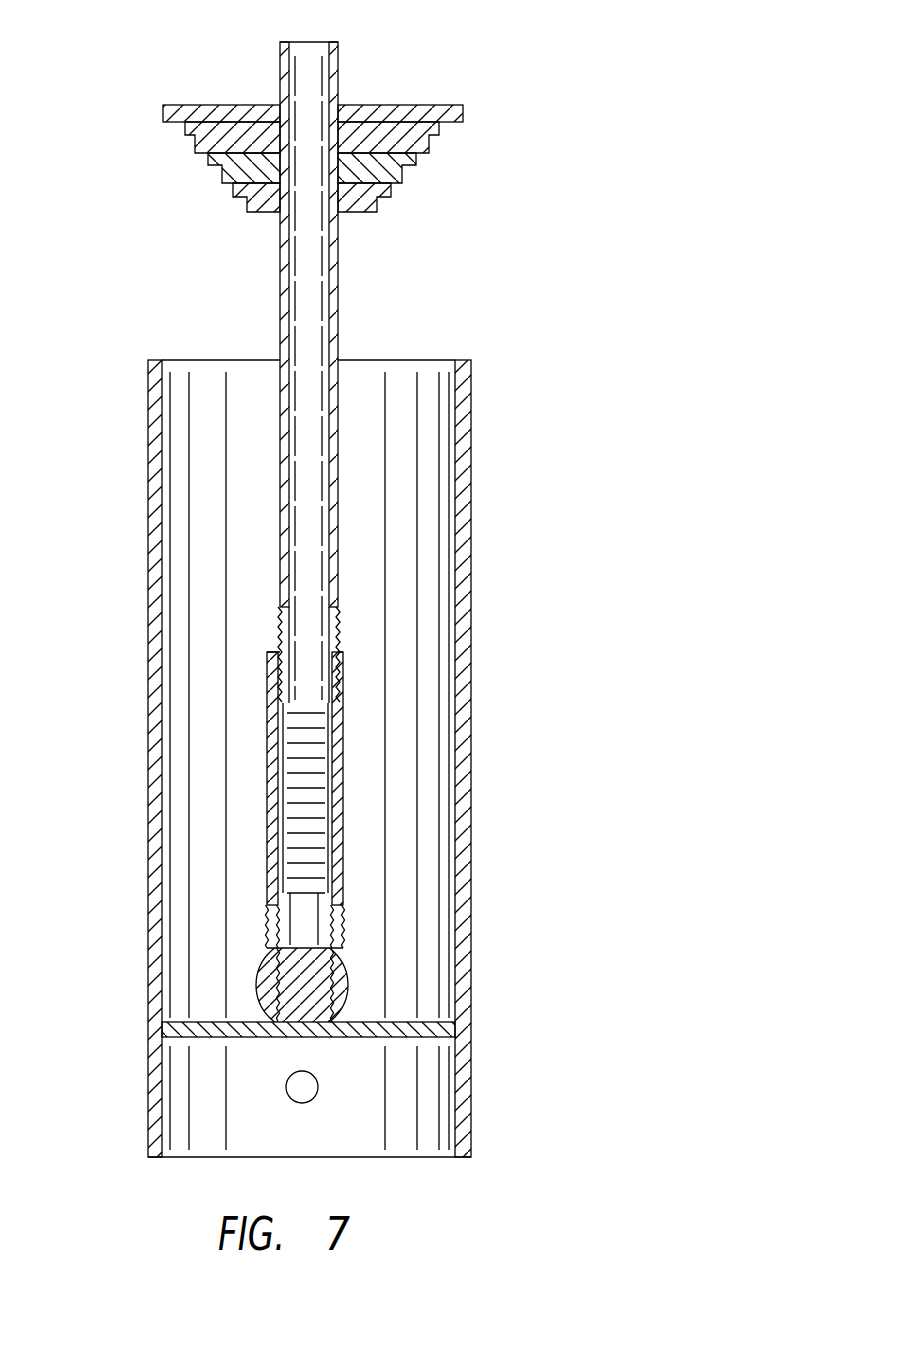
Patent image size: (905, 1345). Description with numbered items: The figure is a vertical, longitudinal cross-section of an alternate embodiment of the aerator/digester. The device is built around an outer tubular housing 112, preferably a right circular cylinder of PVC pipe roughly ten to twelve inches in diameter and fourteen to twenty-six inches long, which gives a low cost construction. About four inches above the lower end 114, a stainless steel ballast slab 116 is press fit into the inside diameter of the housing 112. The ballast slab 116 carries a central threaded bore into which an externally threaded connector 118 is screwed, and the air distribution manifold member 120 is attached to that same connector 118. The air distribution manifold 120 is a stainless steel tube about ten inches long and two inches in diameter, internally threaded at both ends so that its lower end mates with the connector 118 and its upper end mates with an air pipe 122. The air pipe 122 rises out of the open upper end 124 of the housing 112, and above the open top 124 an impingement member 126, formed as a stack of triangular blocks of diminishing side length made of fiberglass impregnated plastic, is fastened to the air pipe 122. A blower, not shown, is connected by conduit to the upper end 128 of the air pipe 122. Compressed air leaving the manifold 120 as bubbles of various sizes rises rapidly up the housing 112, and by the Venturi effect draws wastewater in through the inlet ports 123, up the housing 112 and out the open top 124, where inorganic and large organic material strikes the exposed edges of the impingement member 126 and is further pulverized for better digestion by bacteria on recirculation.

The outer tubular housing 112 is at (471, 860).
The lower end 114 is at (470, 1157).
The ballast slab 116 is at (203, 1020).
The externally threaded connector 118 is at (273, 972).
The air distribution manifold member 120 is at (345, 768).
The air pipe 122 is at (338, 500).
The inlet ports 123 is at (348, 978).
The open upper end 124 is at (428, 360).
The impingement member 126 is at (463, 108).
The upper end of the air pipe 128 is at (340, 42).